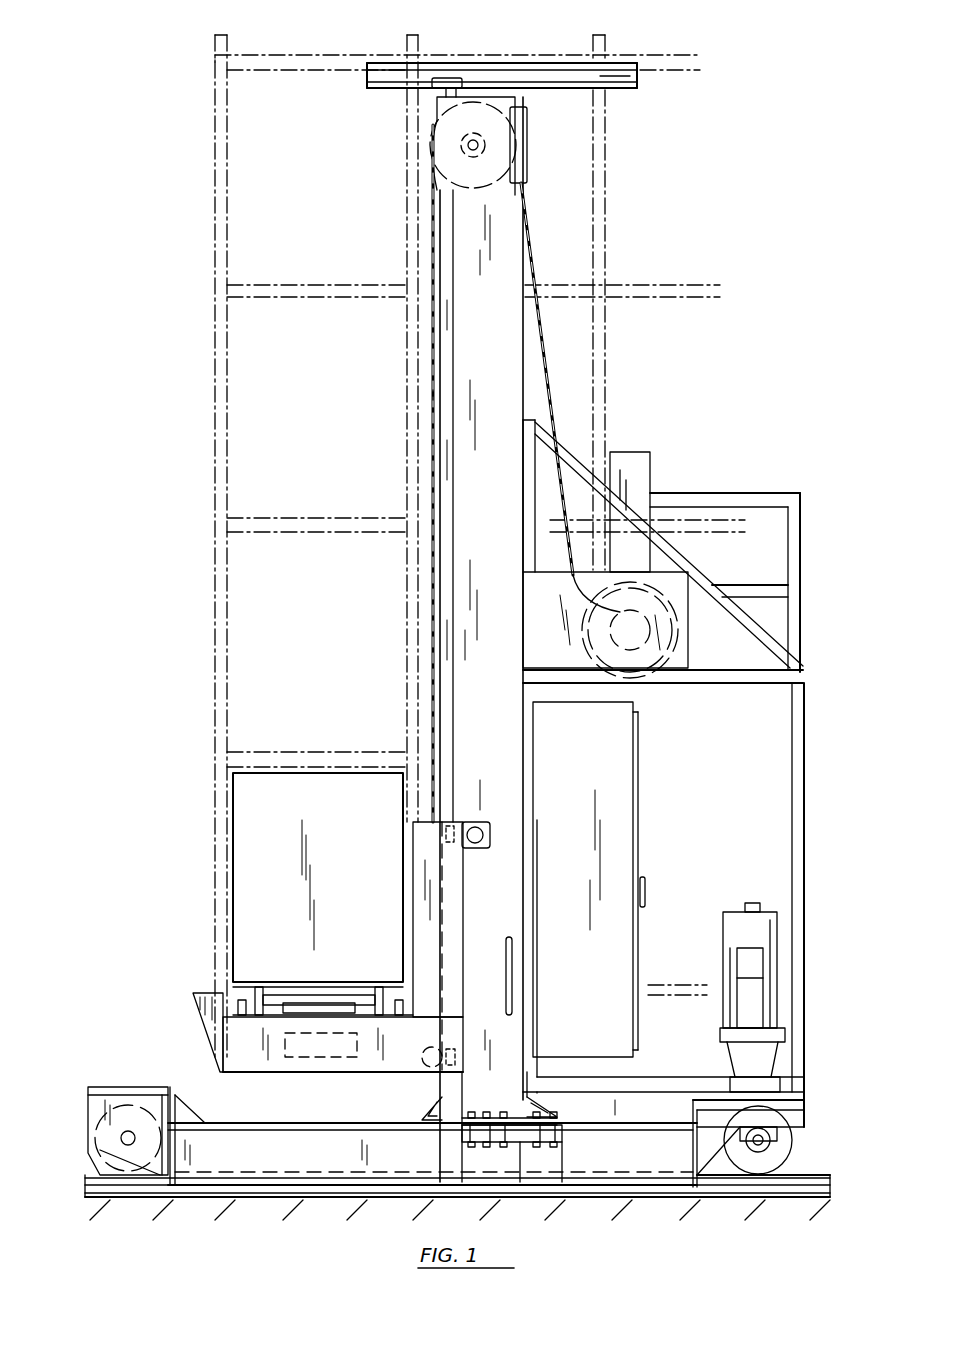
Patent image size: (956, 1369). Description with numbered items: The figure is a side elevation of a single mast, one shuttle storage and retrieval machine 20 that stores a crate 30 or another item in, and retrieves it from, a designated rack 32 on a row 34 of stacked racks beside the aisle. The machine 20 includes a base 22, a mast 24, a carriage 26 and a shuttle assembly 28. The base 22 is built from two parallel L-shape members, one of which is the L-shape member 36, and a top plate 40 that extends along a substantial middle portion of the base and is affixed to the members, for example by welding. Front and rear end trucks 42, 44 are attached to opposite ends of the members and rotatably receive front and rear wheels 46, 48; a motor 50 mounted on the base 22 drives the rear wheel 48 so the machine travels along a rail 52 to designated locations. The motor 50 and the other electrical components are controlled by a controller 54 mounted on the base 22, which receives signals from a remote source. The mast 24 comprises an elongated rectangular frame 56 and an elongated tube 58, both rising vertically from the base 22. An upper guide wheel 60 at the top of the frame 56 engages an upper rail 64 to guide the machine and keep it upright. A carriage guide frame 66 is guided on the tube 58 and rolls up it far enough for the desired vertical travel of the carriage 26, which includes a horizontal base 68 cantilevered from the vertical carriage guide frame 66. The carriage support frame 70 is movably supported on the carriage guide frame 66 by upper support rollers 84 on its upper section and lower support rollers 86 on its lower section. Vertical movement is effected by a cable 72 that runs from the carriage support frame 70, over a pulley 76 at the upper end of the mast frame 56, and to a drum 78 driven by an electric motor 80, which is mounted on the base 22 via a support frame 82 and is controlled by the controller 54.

The storage and retrieval machine 20 is at (836, 805).
The base 22 is at (668, 1080).
The mast 24 is at (528, 372).
The carriage 26 is at (196, 1034).
The shuttle assembly 28 is at (234, 990).
The crate 30 is at (232, 838).
The rack 32 is at (245, 518).
The row of stacked racks 34 is at (212, 196).
The L-shape member 36 is at (594, 1166).
The top plate 40 is at (352, 1092).
The front end truck 42 is at (100, 1112).
The rear end truck 44 is at (792, 1124).
The front wheel 46 is at (105, 1150).
The rear wheel 48 is at (795, 1152).
The motor 50 is at (775, 996).
The rail 52 is at (800, 1180).
The controller 54 is at (626, 934).
The rectangular frame 56 is at (488, 248).
The tube 58 is at (440, 350).
The upper guide wheel 60 is at (455, 80).
The upper rail 64 is at (618, 86).
The carriage guide frame 66 is at (465, 916).
The horizontal base 68 is at (236, 1072).
The carriage support frame 70 is at (305, 1064).
The cable 72 is at (434, 396).
The pulley 76 is at (432, 140).
The drum 78 is at (690, 584).
The electric motor 80 is at (648, 468).
The support frame 82 is at (806, 676).
The upper support roller 84 is at (480, 820).
The lower support roller 86 is at (440, 1050).